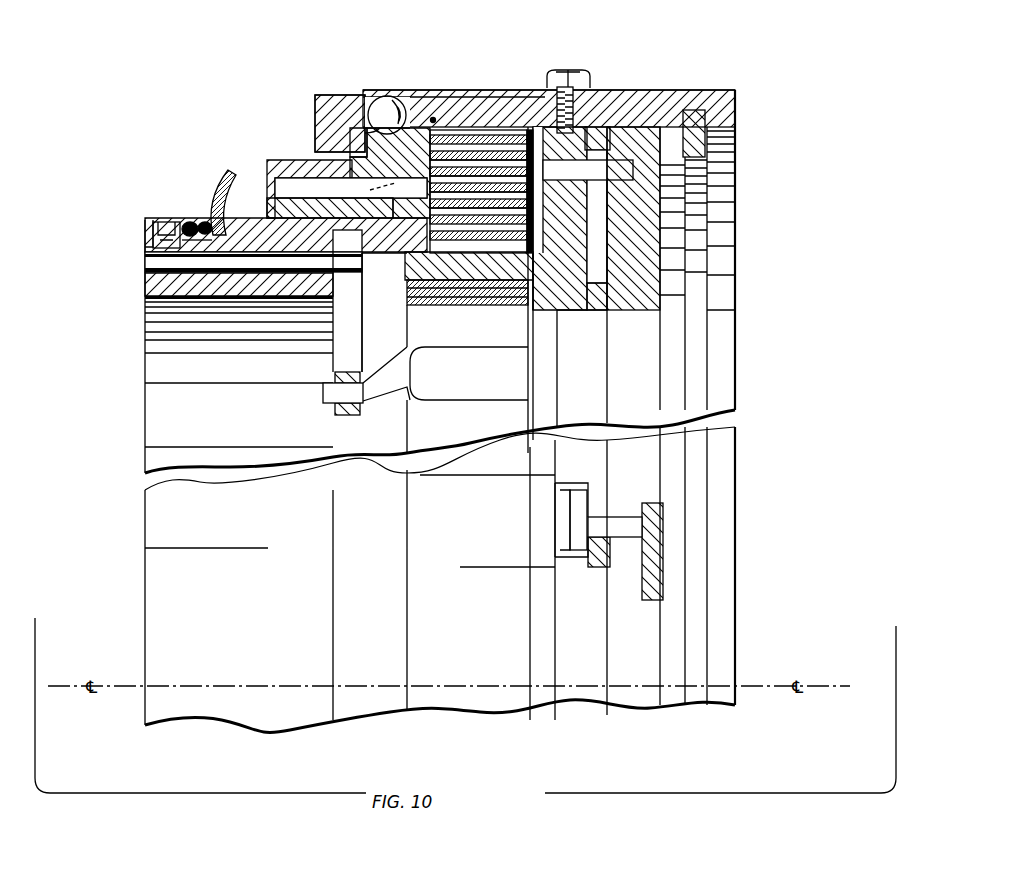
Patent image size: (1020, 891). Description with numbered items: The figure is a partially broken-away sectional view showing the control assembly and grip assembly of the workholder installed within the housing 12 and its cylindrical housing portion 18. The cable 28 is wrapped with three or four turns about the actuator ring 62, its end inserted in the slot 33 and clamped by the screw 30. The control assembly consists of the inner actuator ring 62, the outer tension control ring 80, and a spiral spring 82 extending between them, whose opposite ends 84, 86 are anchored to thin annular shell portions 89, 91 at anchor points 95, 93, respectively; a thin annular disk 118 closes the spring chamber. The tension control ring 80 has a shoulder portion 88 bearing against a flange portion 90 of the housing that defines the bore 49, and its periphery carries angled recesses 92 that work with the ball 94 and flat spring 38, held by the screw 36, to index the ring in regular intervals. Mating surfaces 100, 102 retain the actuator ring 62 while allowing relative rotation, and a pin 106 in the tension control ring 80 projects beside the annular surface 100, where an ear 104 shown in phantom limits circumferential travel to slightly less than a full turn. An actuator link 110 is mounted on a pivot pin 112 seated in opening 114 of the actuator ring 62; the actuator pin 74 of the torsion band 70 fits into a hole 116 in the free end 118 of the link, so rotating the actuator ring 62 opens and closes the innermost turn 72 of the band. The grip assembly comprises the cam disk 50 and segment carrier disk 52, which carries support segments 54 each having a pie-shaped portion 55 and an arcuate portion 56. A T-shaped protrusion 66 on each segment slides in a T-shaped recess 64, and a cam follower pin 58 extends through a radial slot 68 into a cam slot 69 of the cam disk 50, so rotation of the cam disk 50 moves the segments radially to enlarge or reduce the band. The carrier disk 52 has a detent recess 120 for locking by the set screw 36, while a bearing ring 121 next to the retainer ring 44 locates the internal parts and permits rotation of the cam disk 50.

The housing 12 is at (332, 90).
The cylindrical housing portion 18 is at (685, 85).
The cable 28 is at (222, 190).
The anchor screw 30 is at (160, 222).
The slot 33 is at (195, 224).
The screw 36 is at (560, 71).
The flat spring 38 is at (433, 88).
The circular spring clip 44 is at (712, 140).
The bore 49 is at (345, 142).
The cam disk 50 is at (700, 270).
The segment carrier disk 52 is at (570, 318).
The support segment 54 is at (596, 140).
The pie-shaped portion 55 is at (540, 495).
The arcuate portion 56 is at (530, 565).
The cam follower pin 58 is at (607, 190).
The actuator ring 62 is at (148, 235).
The T-shaped recess 64 is at (575, 570).
The T-shaped protrusion 66 is at (575, 520).
The radial slot 68 is at (610, 243).
The cam slot 69 is at (612, 225).
The torsion band 70 is at (400, 312).
The innermost turn 72 is at (430, 325).
The actuator pin 74 is at (370, 405).
The tension control ring 80 is at (432, 120).
The spiral spring 82 is at (497, 143).
The spring end 84 is at (450, 283).
The spring end 86 is at (458, 150).
The shoulder portion 88 is at (320, 96).
The annular shell portion 89 is at (540, 250).
The flange portion 90 is at (348, 147).
The annular shell portion 91 is at (458, 200).
The angled recess 92 is at (390, 173).
The anchor point 93 is at (474, 165).
The ball 94 is at (382, 95).
The anchor point 95 is at (478, 232).
The annular surface 100 is at (286, 235).
The mating surface 102 is at (390, 208).
The ear 104 is at (351, 188).
The pin 106 is at (268, 185).
The actuator link 110 is at (333, 350).
The pivot pin 112 is at (262, 298).
The opening 114 is at (148, 262).
The hole 116 is at (323, 393).
The free end 118 is at (548, 124).
The detent recess 120 is at (597, 128).
The bearing ring 121 is at (720, 158).